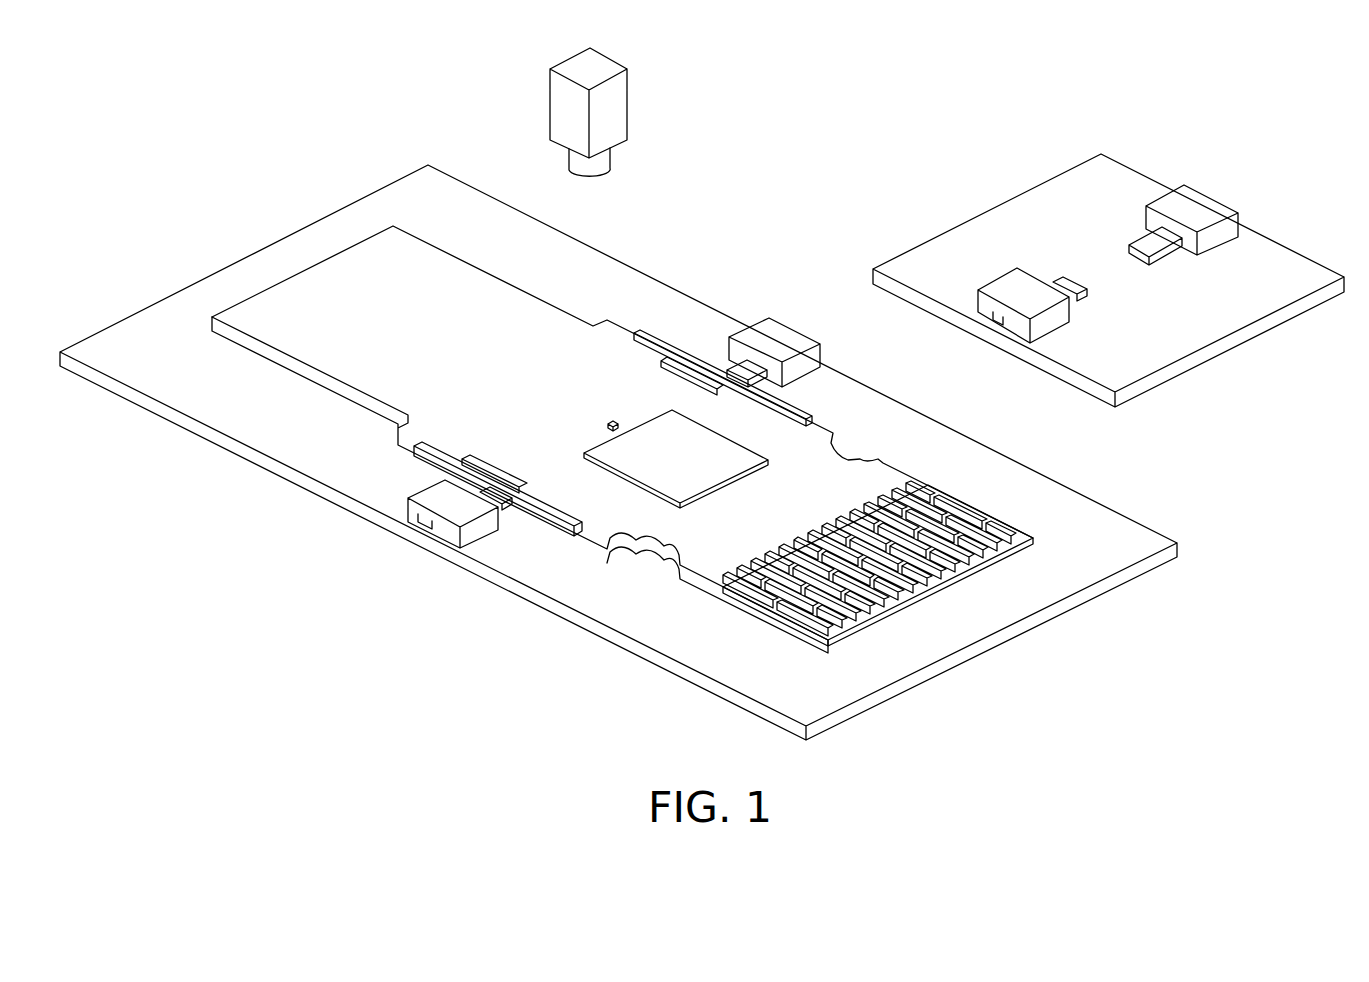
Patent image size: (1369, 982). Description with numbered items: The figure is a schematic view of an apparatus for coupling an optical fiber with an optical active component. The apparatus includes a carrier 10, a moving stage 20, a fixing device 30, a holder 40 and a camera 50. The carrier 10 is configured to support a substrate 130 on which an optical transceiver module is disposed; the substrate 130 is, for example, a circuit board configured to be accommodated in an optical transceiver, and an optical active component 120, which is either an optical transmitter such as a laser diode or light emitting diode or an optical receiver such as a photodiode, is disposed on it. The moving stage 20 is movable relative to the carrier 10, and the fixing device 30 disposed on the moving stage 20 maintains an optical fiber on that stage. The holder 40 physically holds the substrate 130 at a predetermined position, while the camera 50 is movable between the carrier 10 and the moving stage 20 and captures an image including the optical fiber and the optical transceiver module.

The carrier 10 is at (985, 645).
The moving stage 20 is at (1215, 348).
The fixing device 30 is at (1199, 207).
The holder 40 is at (778, 340).
The camera 50 is at (622, 92).
The optical active component 120 is at (602, 426).
The substrate 130 is at (437, 374).